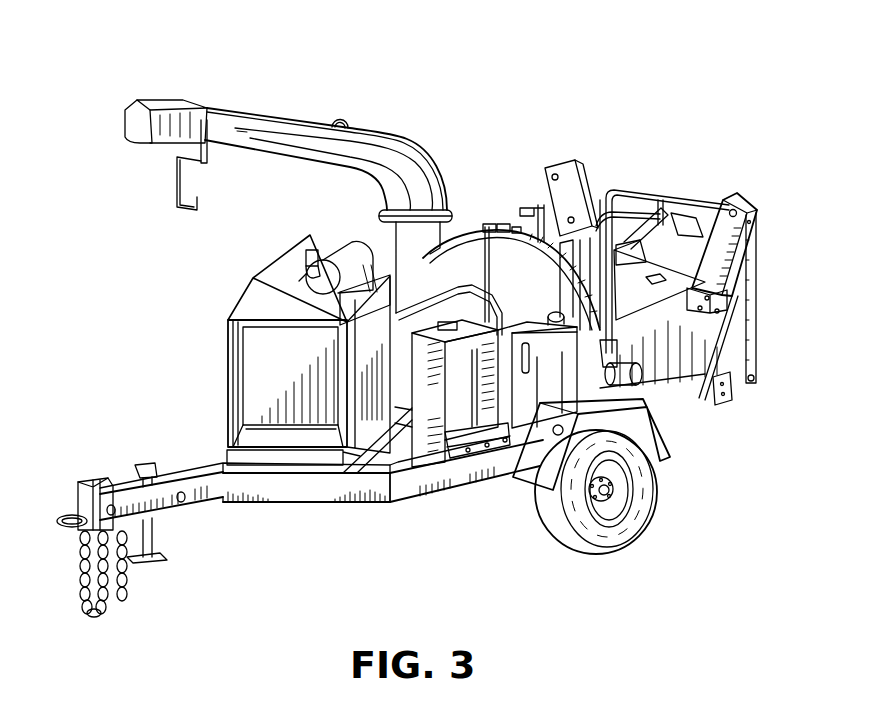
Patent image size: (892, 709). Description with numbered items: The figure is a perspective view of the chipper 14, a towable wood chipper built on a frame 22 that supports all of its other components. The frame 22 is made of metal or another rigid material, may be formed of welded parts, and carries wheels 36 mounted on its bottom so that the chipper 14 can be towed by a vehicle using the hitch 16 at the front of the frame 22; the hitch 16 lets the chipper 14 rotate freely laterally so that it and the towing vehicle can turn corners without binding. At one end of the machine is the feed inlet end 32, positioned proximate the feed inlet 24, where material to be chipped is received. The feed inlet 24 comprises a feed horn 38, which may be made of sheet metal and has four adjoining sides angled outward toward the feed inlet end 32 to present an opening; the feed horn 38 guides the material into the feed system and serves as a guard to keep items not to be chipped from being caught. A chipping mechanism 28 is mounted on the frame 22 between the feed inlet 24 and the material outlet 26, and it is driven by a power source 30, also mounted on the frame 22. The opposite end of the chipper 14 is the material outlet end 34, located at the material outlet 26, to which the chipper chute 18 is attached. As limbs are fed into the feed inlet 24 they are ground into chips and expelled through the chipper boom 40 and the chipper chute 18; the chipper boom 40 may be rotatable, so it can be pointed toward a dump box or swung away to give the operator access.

The chipper 14 is at (694, 155).
The hitch 16 is at (63, 535).
The chipper chute 18 is at (166, 104).
The frame 22 is at (309, 494).
The feed inlet 24 is at (762, 348).
The material outlet 26 is at (275, 86).
The chipping mechanism 28 is at (509, 229).
The power source 30 is at (227, 366).
The feed inlet end 32 is at (800, 276).
The material outlet end 34 is at (111, 334).
The wheels 36 is at (629, 540).
The feed horn 38 is at (660, 372).
The chipper boom 40 is at (296, 146).